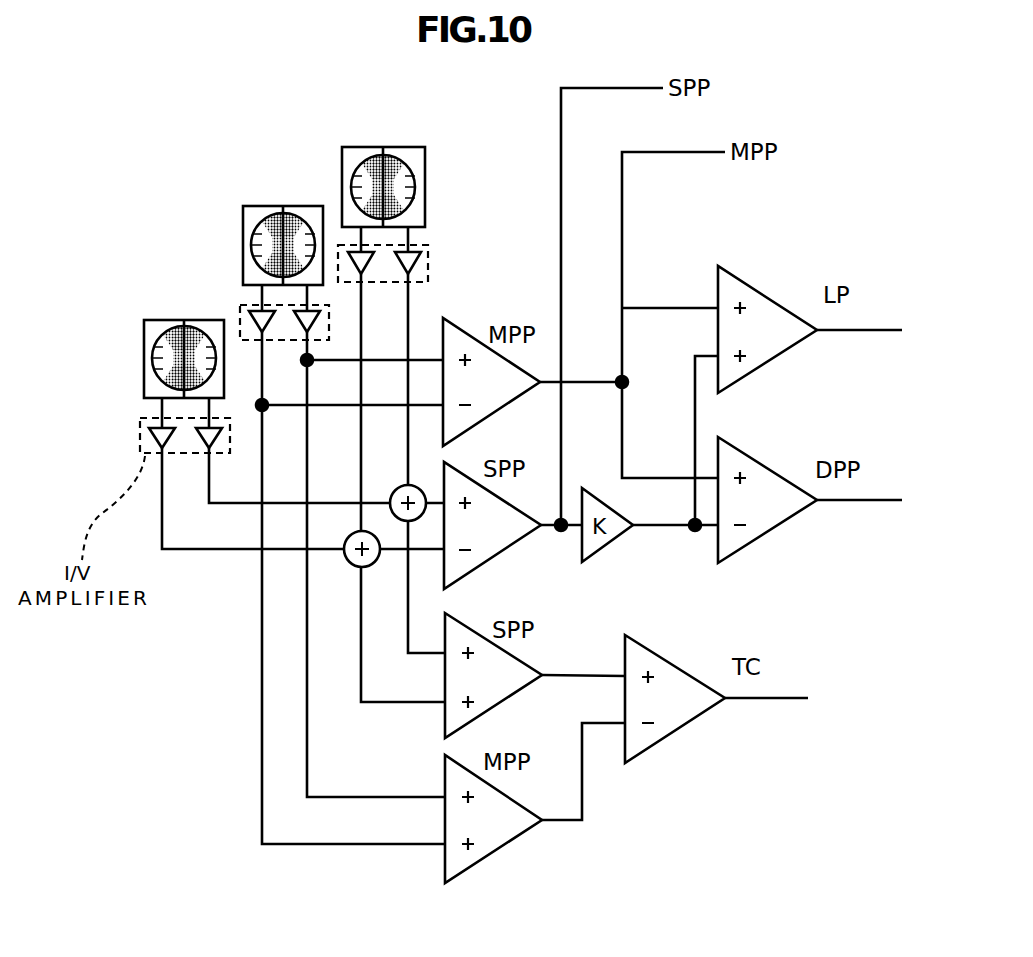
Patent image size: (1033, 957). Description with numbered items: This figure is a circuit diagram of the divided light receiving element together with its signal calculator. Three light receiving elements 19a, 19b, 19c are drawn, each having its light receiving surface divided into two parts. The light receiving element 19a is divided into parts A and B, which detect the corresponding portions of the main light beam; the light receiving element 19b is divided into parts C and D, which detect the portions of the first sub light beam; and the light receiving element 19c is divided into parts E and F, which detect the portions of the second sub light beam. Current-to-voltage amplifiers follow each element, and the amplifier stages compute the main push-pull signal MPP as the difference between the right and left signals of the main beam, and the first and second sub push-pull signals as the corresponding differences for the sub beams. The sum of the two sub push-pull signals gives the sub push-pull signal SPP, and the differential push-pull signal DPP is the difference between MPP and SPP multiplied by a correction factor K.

The light receiving element 19a is at (270, 206).
The light receiving element 19b is at (365, 147).
The light receiving element 19c is at (170, 320).